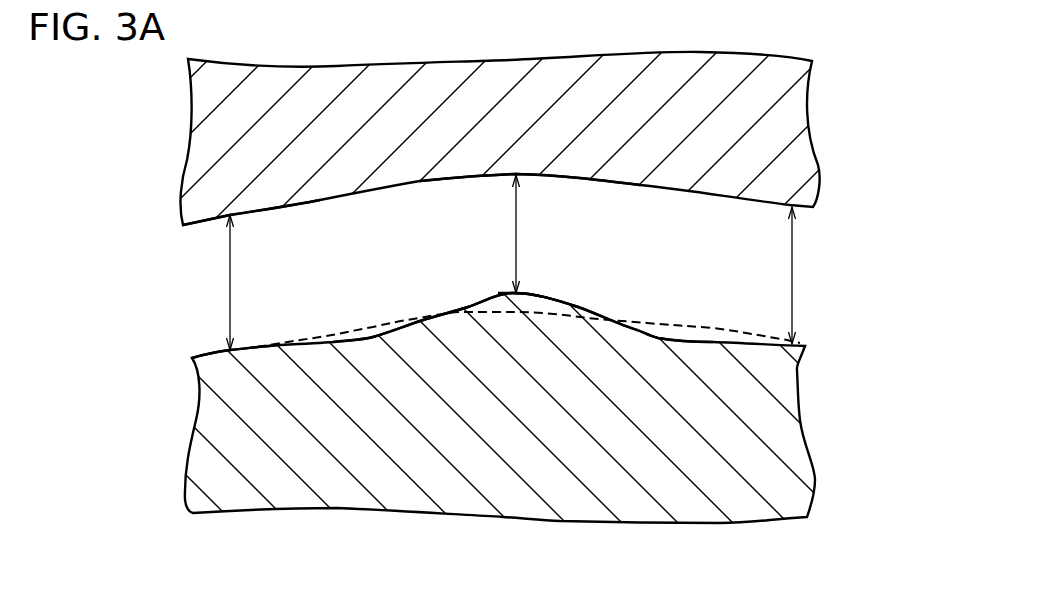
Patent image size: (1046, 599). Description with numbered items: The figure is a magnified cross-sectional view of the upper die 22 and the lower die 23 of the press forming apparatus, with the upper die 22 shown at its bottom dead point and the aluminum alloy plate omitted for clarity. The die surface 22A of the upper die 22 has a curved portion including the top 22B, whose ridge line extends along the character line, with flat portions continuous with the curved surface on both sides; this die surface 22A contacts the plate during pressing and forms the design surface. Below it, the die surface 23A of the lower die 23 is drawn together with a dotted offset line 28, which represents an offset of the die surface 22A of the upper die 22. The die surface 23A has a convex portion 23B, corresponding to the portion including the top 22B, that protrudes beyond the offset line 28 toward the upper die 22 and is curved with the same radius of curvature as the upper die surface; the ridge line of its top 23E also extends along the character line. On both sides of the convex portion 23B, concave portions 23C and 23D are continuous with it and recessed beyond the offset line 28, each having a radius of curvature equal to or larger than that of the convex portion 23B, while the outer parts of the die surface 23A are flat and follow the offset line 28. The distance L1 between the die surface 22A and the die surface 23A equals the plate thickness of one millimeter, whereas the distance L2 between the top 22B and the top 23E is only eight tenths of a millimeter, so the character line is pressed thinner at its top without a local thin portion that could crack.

The upper die 22 is at (673, 65).
The die surface of the upper die 22A is at (320, 199).
The top of the die surface of the upper die 22B is at (519, 178).
The lower die 23 is at (638, 510).
The die surface of the lower die 23A is at (228, 350).
The convex portion 23B is at (521, 293).
The concave portion 23C is at (377, 338).
The concave portion 23D is at (655, 336).
The top of the convex portion 23E is at (507, 293).
The offset line 28 is at (713, 327).
The distance between the die surfaces L1 is at (227, 280).
The distance between the tops L2 is at (519, 233).